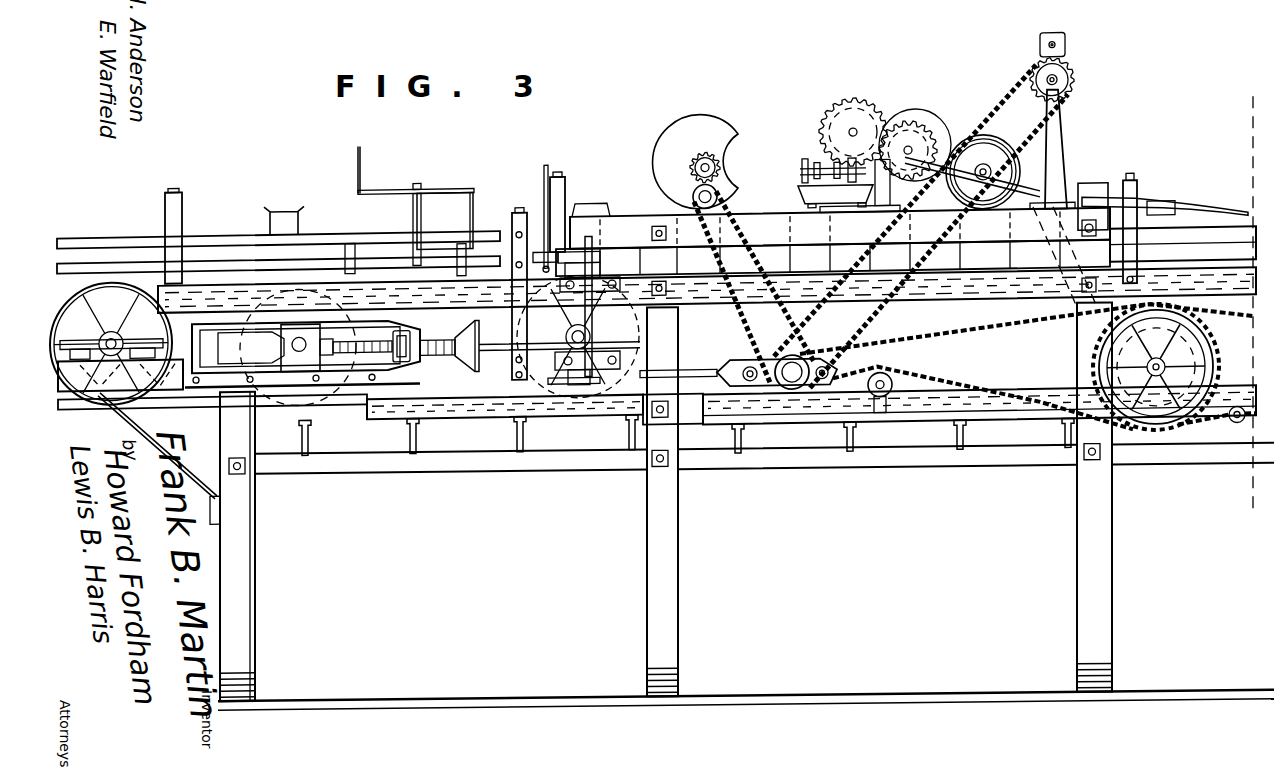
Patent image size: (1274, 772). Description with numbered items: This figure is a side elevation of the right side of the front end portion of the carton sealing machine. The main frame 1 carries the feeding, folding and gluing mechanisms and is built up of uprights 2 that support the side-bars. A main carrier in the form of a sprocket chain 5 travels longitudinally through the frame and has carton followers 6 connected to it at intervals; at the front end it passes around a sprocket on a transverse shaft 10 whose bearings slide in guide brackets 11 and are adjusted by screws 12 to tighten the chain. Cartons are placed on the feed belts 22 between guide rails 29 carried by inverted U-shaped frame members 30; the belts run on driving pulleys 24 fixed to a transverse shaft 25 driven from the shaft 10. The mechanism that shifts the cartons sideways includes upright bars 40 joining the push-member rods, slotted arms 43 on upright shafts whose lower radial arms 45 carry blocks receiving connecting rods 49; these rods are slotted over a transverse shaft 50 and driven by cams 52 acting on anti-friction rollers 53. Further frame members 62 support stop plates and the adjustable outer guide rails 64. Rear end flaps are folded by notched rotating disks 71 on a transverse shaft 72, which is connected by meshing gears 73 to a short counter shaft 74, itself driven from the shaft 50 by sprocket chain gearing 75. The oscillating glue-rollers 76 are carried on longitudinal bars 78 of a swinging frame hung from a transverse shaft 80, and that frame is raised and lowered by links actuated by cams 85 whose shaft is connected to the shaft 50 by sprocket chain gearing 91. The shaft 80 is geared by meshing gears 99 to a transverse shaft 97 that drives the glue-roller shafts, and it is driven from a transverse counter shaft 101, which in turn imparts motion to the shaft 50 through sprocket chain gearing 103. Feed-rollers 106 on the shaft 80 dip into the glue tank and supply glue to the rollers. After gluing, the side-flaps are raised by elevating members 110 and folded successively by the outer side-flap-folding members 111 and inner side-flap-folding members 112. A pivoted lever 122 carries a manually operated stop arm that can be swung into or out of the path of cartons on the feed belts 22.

The main frame 1 is at (652, 538).
The uprights 2 is at (1113, 616).
The sprocket chain 5 is at (920, 306).
The carton followers 6 is at (311, 432).
The transverse shaft 10 is at (258, 315).
The guide brackets 11 is at (404, 389).
The screws 12 is at (440, 344).
The feed belts 22 is at (202, 408).
The driving pulleys 24 is at (492, 424).
The transverse shaft 25 is at (109, 335).
The guide rails 29 is at (207, 244).
The inverted U-shaped frame members 30 is at (174, 216).
The upright bars 40 is at (524, 242).
The arms 43 is at (535, 259).
The radial arms 45 is at (592, 396).
The connecting rods 49 is at (713, 429).
The transverse shaft 50 is at (806, 370).
The cams 52 is at (760, 379).
The anti-friction rollers 53 is at (798, 401).
The inverted U-shaped frame members 62 is at (560, 207).
The outer guide rails 64 is at (1200, 257).
The rotating disks 71 is at (735, 155).
The transverse shaft 72 is at (680, 171).
The meshing gears 73 is at (707, 171).
The counter shaft 74 is at (718, 206).
The sprocket chain gearing 75 is at (745, 263).
The oscillating glue-rollers 76 is at (996, 165).
The longitudinal bars 78 is at (1062, 184).
The transverse shaft 80 is at (925, 130).
The cams 85 is at (1076, 101).
The sprocket chain gearing 91 is at (1020, 91).
The transverse shaft 97 is at (853, 140).
The meshing gears 99 is at (901, 153).
The transverse counter shaft 101 is at (1156, 393).
The sprocket chain gearing 103 is at (945, 377).
The feed-rollers 106 is at (936, 151).
The elevating members 110 is at (1130, 196).
The outer side-flap-folding members 111 is at (1168, 203).
The inner side-flap-folding members 112 is at (1212, 221).
The lever 122 is at (398, 185).